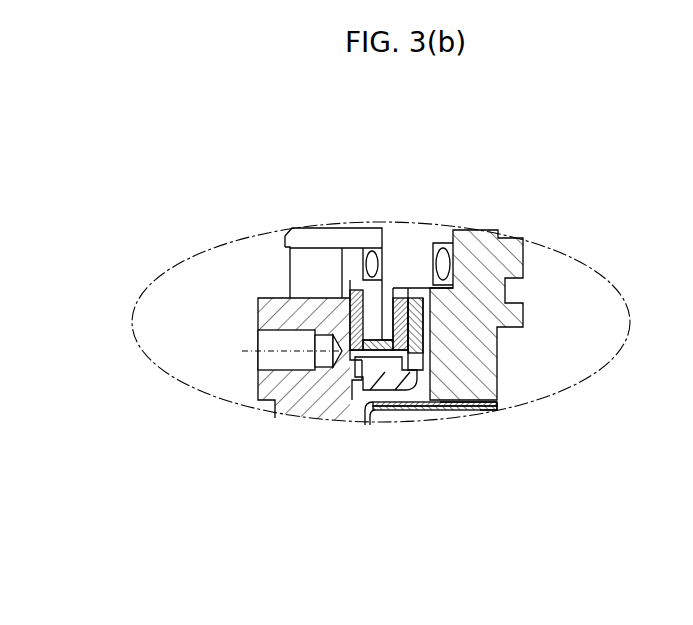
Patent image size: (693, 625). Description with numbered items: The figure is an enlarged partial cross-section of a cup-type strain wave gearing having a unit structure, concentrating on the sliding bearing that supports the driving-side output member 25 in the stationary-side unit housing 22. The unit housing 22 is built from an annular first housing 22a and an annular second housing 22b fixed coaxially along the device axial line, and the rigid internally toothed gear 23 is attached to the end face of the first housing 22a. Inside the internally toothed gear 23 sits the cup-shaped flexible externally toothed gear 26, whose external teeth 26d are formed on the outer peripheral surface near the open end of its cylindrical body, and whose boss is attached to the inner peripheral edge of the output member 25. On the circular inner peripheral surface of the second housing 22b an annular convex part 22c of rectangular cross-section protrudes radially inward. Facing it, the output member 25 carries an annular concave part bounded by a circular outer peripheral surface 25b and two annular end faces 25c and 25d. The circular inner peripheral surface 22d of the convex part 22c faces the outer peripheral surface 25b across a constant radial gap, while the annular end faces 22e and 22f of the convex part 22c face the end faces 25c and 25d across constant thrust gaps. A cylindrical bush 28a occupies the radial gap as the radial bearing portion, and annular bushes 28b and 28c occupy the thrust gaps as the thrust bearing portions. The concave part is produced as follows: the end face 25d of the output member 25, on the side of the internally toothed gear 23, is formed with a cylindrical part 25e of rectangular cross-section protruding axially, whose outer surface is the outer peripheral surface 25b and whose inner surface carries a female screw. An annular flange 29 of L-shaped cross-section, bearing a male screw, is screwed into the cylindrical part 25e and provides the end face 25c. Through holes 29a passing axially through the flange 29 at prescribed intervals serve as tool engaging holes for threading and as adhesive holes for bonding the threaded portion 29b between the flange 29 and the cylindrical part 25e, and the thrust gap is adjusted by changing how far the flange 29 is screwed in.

The unit housing 22 is at (373, 221).
The first housing 22a is at (386, 305).
The second housing 22b is at (361, 220).
The annular convex part 22c is at (380, 300).
The circular inner peripheral surface 22d is at (432, 350).
The annular end face 22e is at (506, 234).
The annular end face 22f is at (350, 312).
The internally toothed gear 23 is at (507, 362).
The output member 25 is at (248, 388).
The circular outer peripheral surface 25b is at (350, 333).
The annular end face 25c is at (427, 303).
The annular end face 25d is at (333, 333).
The cylindrical part 25e is at (355, 365).
The externally toothed gear 26 is at (511, 415).
The external teeth 26d is at (492, 415).
The cylindrical bush 28a is at (385, 361).
The annular bush 28b is at (402, 282).
The annular bush 28c is at (355, 284).
The annular flange 29 is at (414, 412).
The through holes 29a is at (400, 414).
The threaded portion 29b is at (467, 411).